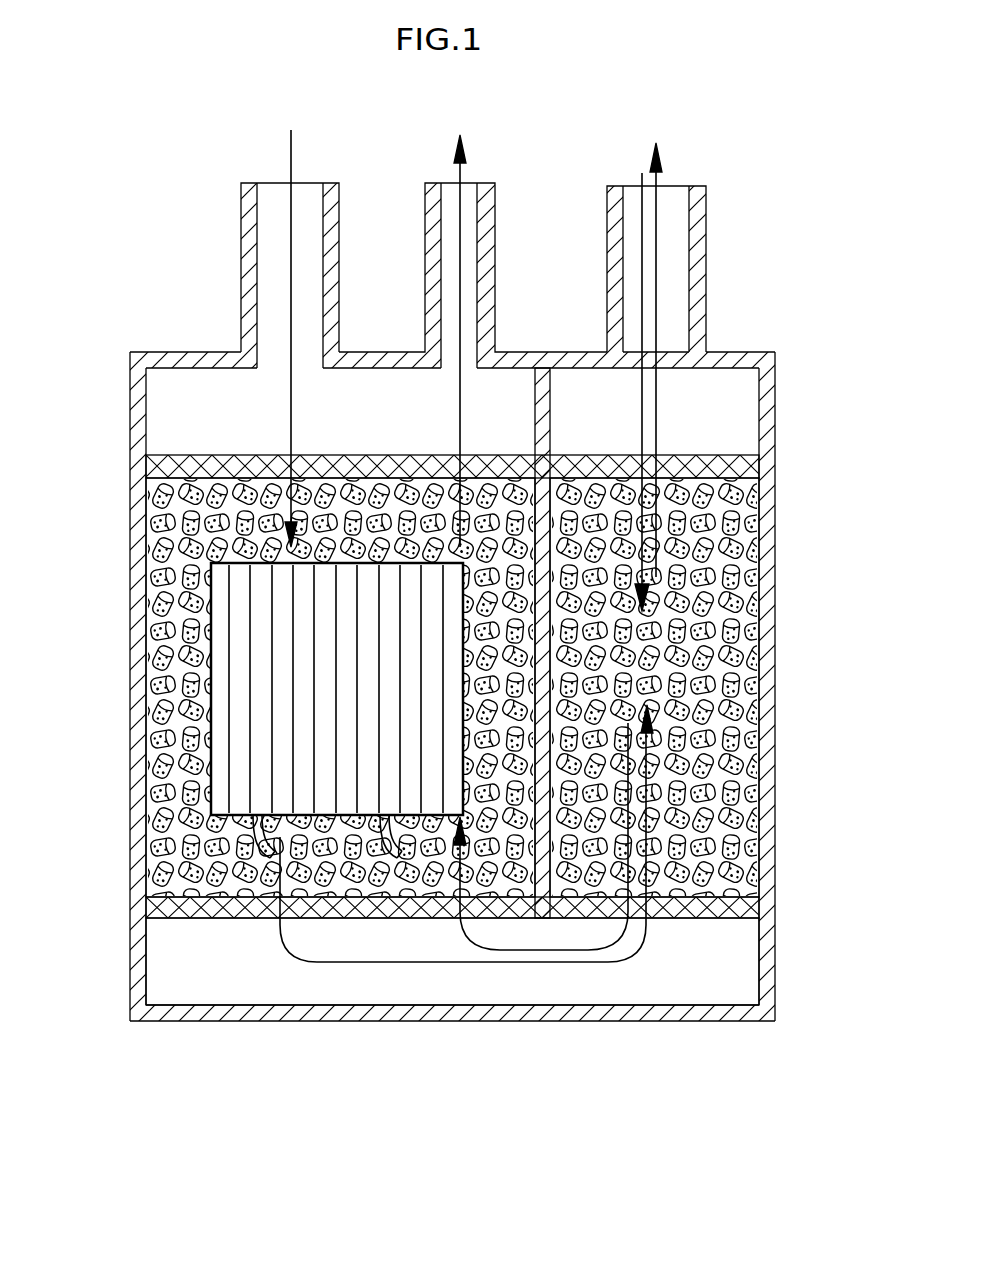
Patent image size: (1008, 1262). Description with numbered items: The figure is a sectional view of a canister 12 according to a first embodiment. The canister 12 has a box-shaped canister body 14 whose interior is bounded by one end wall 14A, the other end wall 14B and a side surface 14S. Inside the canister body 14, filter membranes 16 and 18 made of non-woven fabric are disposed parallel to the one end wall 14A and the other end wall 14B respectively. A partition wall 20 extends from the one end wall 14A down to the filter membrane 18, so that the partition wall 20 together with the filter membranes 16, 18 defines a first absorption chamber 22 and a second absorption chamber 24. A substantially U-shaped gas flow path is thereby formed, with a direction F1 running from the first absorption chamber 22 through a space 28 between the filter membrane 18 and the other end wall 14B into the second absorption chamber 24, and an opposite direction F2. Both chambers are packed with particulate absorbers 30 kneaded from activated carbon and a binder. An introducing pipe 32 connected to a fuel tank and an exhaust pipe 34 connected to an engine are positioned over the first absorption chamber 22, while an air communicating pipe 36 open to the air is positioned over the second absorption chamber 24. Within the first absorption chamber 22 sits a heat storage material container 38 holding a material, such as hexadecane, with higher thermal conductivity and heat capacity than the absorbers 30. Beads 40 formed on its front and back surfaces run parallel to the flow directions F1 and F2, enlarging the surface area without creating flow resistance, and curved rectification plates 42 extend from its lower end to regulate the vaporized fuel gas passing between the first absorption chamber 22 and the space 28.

The canister 12 is at (441, 572).
The canister body 14 is at (441, 621).
The one end wall 14A is at (182, 358).
The other end wall 14B is at (212, 1013).
The side surface 14S is at (134, 527).
The filter membrane 16 is at (145, 459).
The filter membrane 18 is at (145, 894).
The partition wall 20 is at (547, 393).
The first absorption chamber 22 is at (145, 563).
The second absorption chamber 24 is at (754, 548).
The space 28 is at (218, 975).
The absorbers 30 is at (157, 636).
The introducing pipe 32 is at (248, 203).
The exhaust pipe 34 is at (432, 203).
The air communicating pipe 36 is at (707, 203).
The heat storage material container 38 is at (259, 609).
The beads 40 is at (237, 575).
The rectification plates 42 is at (237, 833).
The flow direction F1 is at (415, 962).
The flow direction F2 is at (553, 963).